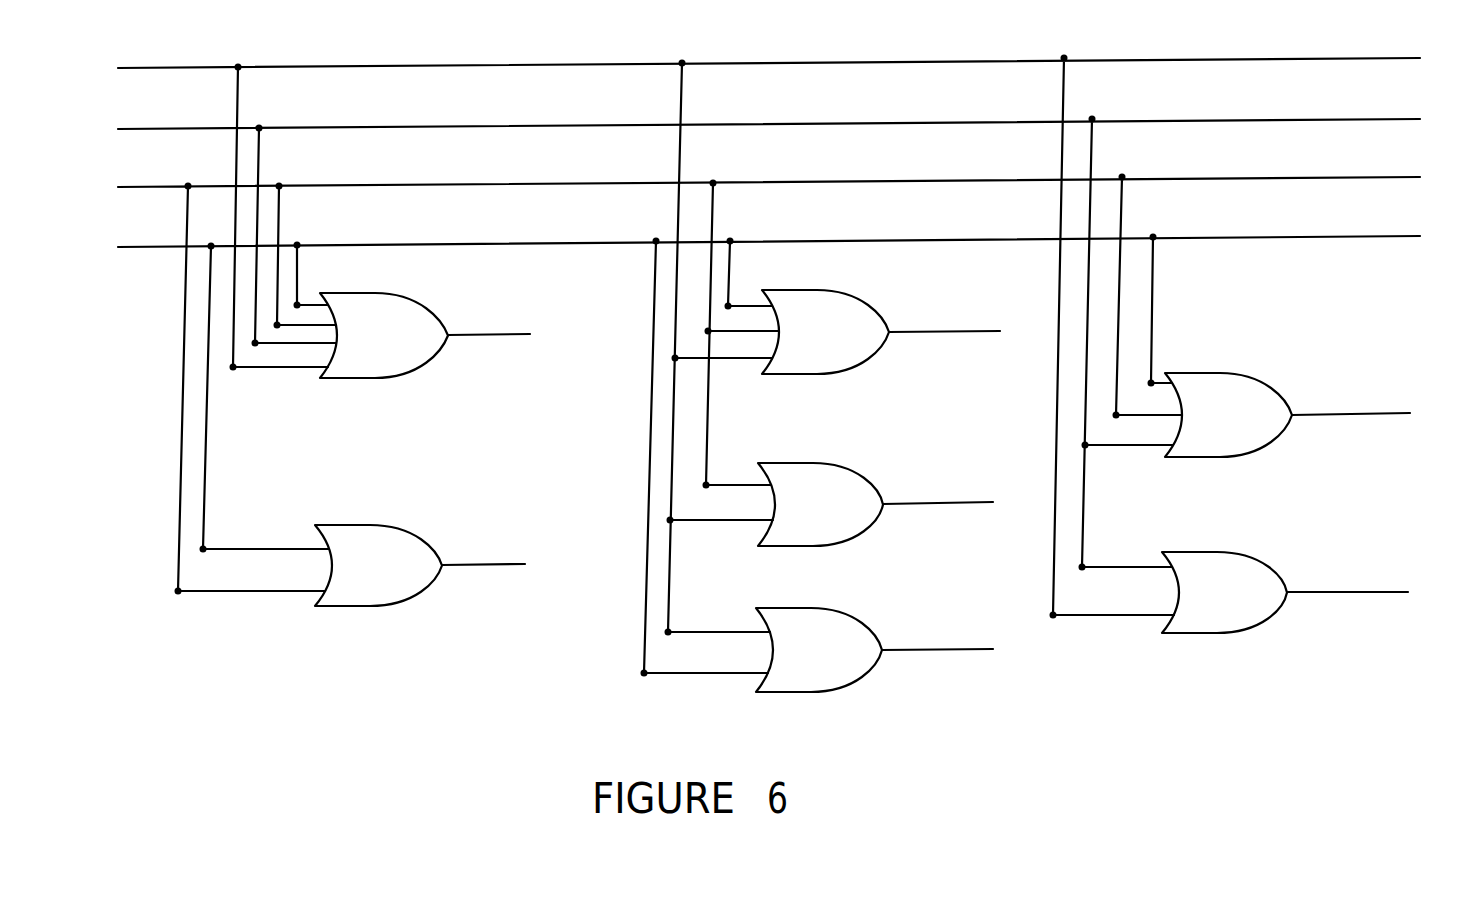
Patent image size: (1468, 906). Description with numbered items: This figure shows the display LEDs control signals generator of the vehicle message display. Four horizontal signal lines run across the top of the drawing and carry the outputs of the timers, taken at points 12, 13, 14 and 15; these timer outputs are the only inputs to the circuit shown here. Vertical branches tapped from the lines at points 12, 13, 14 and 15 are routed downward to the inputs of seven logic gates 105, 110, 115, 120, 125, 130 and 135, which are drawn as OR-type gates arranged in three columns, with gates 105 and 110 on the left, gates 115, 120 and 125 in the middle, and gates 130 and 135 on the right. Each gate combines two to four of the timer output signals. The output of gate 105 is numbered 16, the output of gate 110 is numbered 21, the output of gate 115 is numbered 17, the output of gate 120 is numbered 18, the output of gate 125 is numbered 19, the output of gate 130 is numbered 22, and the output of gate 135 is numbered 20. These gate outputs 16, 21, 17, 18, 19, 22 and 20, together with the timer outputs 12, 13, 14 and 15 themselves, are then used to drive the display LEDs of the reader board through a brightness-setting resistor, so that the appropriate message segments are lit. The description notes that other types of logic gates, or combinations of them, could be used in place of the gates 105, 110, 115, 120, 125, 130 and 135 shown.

The timer output point 12 is at (788, 340).
The timer output point 13 is at (788, 338).
The timer output point 14 is at (788, 379).
The timer output point 15 is at (788, 449).
The logic gate output 16 is at (508, 335).
The logic gate output 17 is at (960, 332).
The logic gate output 18 is at (955, 503).
The logic gate output 19 is at (955, 650).
The logic gate output 20 is at (1364, 593).
The logic gate output 21 is at (501, 565).
The logic gate output 22 is at (1368, 414).
The logic gate 105 is at (340, 335).
The logic gate 110 is at (310, 565).
The logic gate 115 is at (782, 332).
The logic gate 120 is at (776, 504).
The logic gate 125 is at (763, 650).
The logic gate 130 is at (1188, 415).
The logic gate 135 is at (1170, 592).